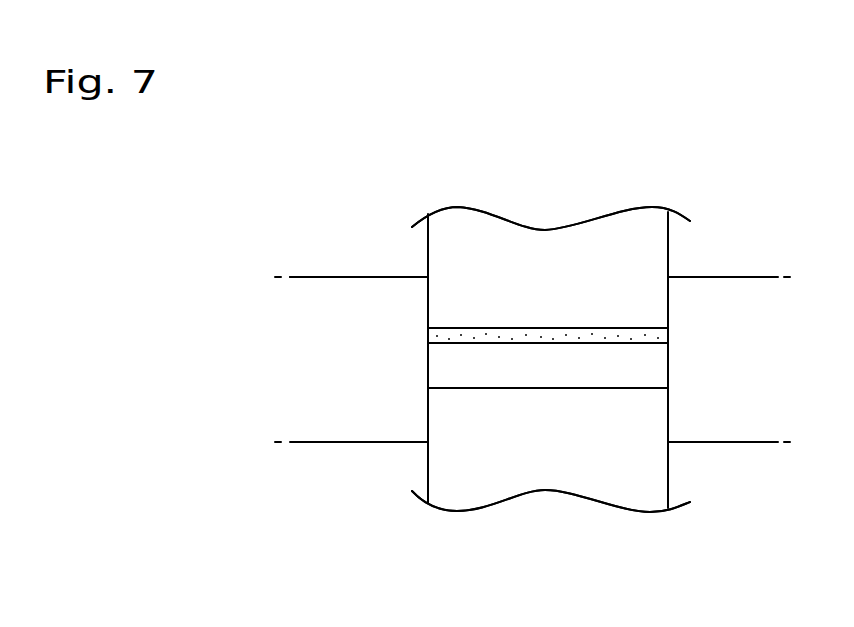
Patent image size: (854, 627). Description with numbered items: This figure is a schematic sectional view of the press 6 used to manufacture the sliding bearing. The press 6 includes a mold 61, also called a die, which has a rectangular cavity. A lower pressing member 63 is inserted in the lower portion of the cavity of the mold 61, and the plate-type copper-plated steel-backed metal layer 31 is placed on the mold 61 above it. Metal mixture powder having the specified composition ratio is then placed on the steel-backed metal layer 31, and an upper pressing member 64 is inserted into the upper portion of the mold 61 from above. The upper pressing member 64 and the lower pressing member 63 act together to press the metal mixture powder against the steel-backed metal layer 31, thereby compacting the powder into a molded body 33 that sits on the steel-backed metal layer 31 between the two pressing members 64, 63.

The press 6 is at (728, 279).
The steel-backed metal layer 31 is at (653, 365).
The molded body 33 is at (605, 332).
The mold 61 is at (333, 287).
The lower pressing member 63 is at (546, 466).
The upper pressing member 64 is at (543, 240).